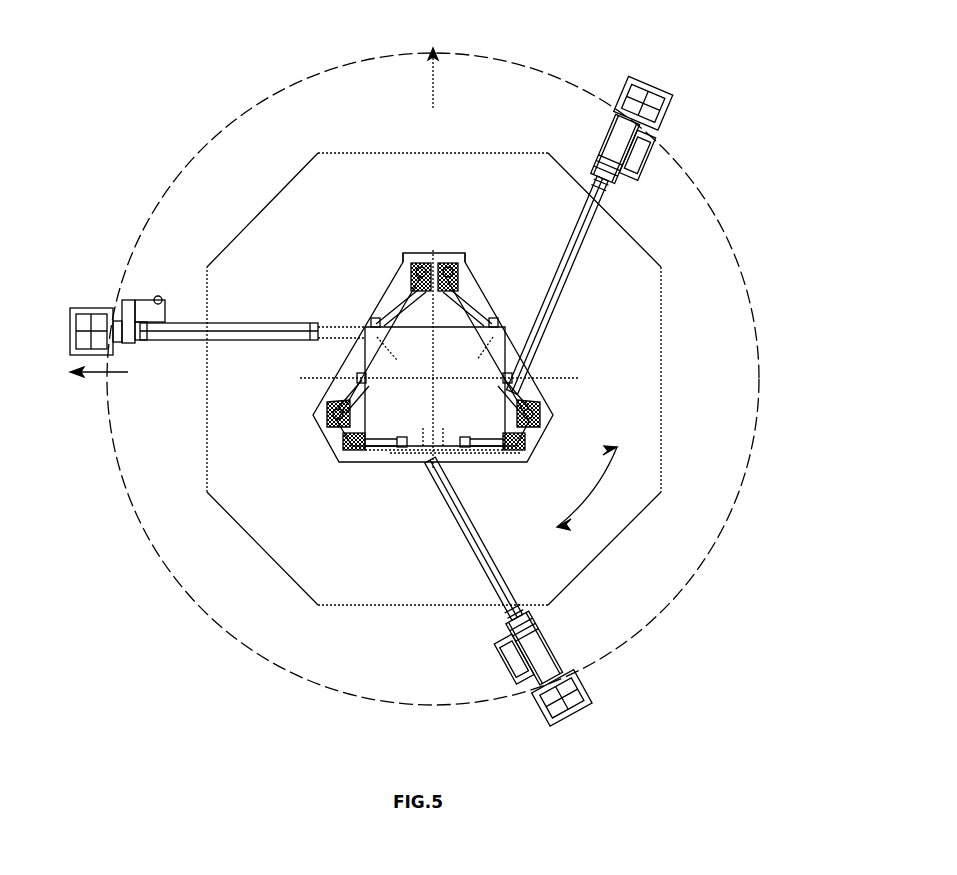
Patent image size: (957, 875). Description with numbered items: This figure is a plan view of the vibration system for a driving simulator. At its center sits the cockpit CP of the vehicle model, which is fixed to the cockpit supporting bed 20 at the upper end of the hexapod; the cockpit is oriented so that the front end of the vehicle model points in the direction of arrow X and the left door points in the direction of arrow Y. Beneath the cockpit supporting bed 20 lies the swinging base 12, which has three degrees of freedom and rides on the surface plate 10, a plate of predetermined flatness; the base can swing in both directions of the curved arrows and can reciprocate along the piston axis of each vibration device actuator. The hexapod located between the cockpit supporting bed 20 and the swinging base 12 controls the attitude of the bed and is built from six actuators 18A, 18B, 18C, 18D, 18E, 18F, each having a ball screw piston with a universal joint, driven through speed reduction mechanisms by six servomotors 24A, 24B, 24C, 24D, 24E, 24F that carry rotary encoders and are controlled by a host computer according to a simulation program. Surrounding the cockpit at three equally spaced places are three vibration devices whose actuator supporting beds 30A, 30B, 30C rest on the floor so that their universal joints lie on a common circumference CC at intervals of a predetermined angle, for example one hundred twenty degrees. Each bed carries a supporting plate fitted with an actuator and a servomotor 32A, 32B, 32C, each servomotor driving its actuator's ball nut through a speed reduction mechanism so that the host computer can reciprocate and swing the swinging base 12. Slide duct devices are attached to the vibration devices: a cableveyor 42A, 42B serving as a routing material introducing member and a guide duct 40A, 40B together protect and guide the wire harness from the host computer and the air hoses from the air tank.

The surface plate 10 is at (533, 152).
The swinging base 12 is at (494, 326).
The cockpit supporting bed 20 is at (378, 330).
The actuator 18A is at (530, 386).
The actuator 18B is at (492, 470).
The actuator 18C is at (384, 465).
The actuator 18D is at (336, 402).
The actuator 18E is at (398, 290).
The actuator 18F is at (470, 290).
The servomotor 24A is at (545, 412).
The servomotor 24B is at (518, 462).
The servomotor 24C is at (350, 462).
The servomotor 24D is at (326, 412).
The servomotor 24E is at (418, 256).
The servomotor 24F is at (452, 256).
The actuator supporting bed 30A is at (643, 82).
The actuator supporting bed 30B is at (592, 700).
The actuator supporting bed 30C is at (92, 308).
The servomotor 32A is at (646, 167).
The servomotor 32B is at (515, 658).
The servomotor 32C is at (150, 302).
The guide duct 40A is at (562, 246).
The guide duct 40B is at (505, 590).
The cableveyor 42A is at (612, 160).
The cableveyor 42B is at (546, 656).
The common circumference CC is at (226, 139).
The cockpit CP is at (518, 352).
The arrow X is at (433, 65).
The arrow Y is at (97, 384).